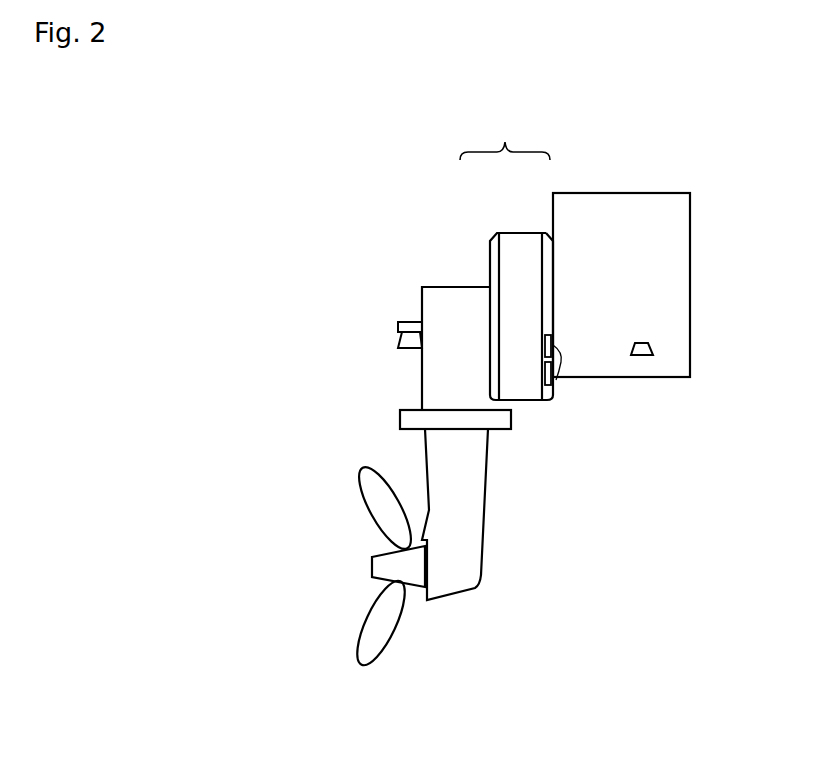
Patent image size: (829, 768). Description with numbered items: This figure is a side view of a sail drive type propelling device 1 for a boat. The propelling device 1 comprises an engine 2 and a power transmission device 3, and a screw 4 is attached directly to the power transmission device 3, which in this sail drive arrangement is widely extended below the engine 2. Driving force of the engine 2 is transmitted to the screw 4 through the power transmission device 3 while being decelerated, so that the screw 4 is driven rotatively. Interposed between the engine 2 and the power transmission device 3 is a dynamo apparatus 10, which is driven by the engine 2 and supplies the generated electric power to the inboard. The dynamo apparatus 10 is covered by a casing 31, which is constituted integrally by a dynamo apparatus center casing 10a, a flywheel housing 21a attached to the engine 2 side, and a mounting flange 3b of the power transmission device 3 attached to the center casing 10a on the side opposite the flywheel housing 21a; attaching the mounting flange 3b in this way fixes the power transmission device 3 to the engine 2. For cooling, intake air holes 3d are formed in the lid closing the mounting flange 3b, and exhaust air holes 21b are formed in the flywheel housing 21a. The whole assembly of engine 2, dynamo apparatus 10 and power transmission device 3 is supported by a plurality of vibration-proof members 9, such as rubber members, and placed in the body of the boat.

The propelling device 1 is at (425, 220).
The engine 2 is at (633, 252).
The power transmission device 3 is at (483, 487).
The mounting flange 3b is at (491, 233).
The air holes 3d is at (487, 277).
The screw 4 is at (372, 595).
The vibration-proof members 9 is at (398, 347).
The dynamo apparatus 10 is at (521, 402).
The dynamo apparatus center casing 10a is at (515, 233).
The flywheel housing 21a is at (548, 233).
The air holes 21b is at (553, 384).
The casing 31 is at (505, 135).